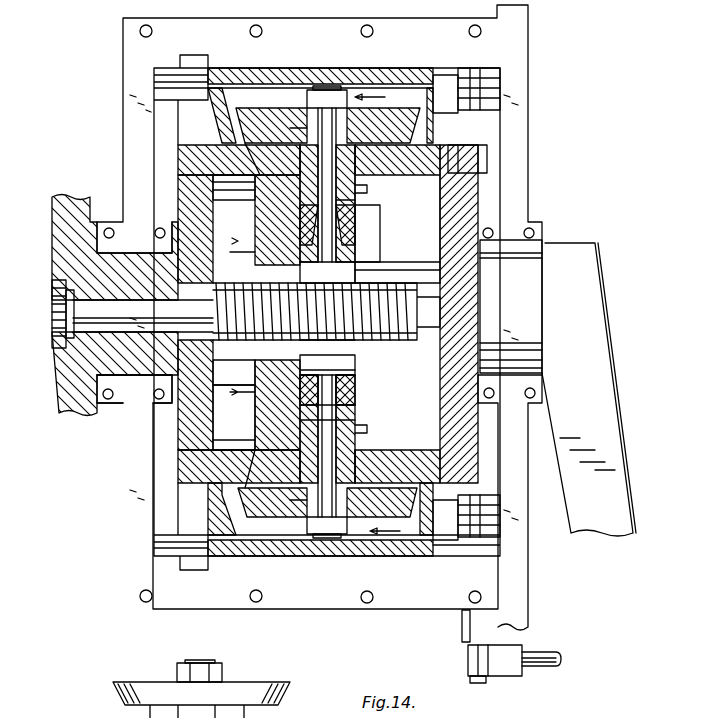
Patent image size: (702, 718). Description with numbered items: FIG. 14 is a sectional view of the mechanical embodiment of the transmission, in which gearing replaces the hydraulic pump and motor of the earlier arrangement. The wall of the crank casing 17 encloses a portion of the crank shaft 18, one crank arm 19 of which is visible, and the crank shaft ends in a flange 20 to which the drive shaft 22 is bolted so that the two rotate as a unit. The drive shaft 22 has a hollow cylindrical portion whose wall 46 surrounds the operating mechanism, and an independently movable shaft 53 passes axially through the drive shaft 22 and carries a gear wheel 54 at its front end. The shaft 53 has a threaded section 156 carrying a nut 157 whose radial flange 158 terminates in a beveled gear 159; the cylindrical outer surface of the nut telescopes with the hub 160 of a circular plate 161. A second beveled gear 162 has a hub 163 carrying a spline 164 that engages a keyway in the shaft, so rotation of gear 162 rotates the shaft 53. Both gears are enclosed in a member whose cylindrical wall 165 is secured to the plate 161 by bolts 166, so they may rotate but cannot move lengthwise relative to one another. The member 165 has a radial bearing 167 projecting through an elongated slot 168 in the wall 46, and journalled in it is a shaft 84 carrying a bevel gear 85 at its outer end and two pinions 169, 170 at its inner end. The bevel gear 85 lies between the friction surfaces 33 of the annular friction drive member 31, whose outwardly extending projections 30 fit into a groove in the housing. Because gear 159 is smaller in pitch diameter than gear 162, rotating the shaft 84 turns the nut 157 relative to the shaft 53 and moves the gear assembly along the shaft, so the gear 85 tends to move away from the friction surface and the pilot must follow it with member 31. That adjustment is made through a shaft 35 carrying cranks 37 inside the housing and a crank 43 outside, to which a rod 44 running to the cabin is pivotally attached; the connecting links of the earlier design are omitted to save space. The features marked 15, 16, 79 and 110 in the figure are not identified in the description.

The arrow direction 15 is at (382, 315).
The passage 16 is at (235, 316).
The wall of the crank casing 17 is at (522, 96).
The crank shaft 18 is at (511, 306).
The crank arm 19 is at (606, 411).
The flange 20 is at (470, 185).
The drive shaft 22 is at (125, 370).
The outwardly extending projections 30 is at (240, 52).
The annular friction drive member 31 is at (288, 66).
The asbestos friction material 33 is at (214, 531).
The shaft 35 is at (462, 634).
The cranks 37 is at (458, 106).
The crank 43 is at (485, 676).
The rod 44 is at (545, 668).
The cylindrical wall 46 is at (198, 152).
The independently movable shaft 53 is at (143, 315).
The gear wheel 54 is at (52, 322).
The bearing lines 79 is at (478, 300).
The shaft 84 is at (322, 88).
The bevel gear 85 is at (418, 115).
The mounting block 110 is at (52, 401).
The threaded section 156 is at (397, 270).
The nut 157 is at (397, 267).
The radial flange 158 is at (345, 235).
The beveled gear 159 is at (355, 238).
The hub 160 is at (355, 368).
The circular plate 161 is at (355, 388).
The beveled gear 162 is at (290, 212).
The hub 163 is at (270, 400).
The spline 164 is at (235, 296).
The cylindrical wall member 165 is at (270, 428).
The bolts 166 is at (368, 188).
The radially extending bearing 167 is at (300, 128).
The elongated slot 168 is at (262, 130).
The pinion 169 is at (355, 215).
The pinion 170 is at (367, 190).